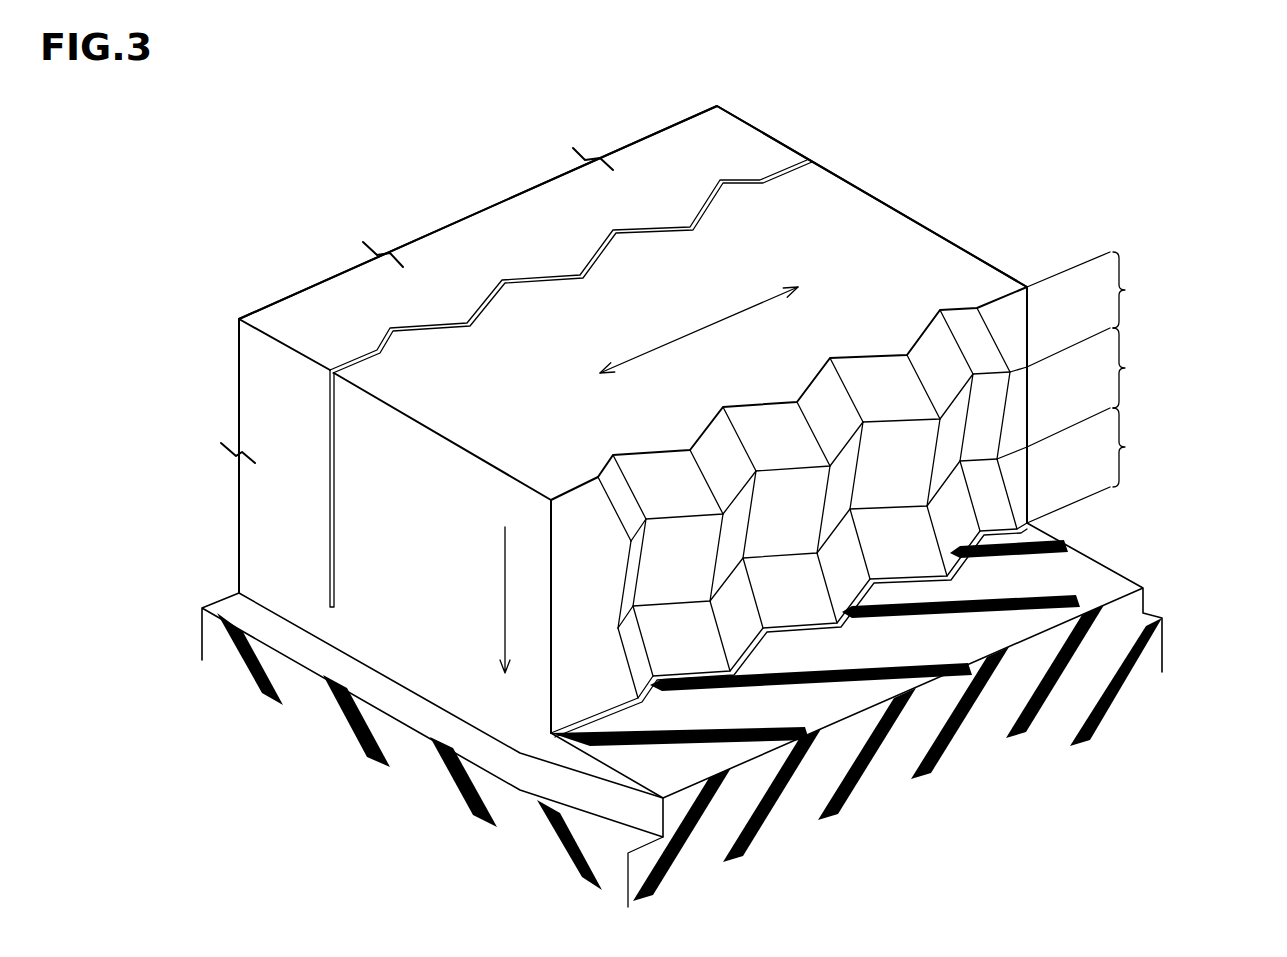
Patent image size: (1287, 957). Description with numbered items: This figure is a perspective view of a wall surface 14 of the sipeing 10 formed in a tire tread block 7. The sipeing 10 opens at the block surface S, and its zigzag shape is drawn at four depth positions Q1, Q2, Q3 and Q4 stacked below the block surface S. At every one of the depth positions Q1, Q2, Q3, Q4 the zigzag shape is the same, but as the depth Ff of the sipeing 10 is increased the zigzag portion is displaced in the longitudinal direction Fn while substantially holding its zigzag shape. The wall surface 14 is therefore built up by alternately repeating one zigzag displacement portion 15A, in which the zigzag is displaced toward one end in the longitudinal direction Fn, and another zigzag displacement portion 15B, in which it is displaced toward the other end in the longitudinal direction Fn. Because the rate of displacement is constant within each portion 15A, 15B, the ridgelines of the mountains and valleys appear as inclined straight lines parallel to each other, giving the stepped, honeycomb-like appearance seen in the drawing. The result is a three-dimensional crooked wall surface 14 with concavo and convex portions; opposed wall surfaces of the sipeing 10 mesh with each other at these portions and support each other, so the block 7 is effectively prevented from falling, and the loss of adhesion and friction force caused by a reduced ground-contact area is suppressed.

The block 7 is at (955, 197).
The block surface S is at (940, 273).
The sipeing 10 is at (737, 180).
The longitudinal direction Fn is at (698, 330).
The depth of the sipeing Ff is at (503, 603).
The depth position Q1 is at (1067, 268).
The depth position Q2 is at (1067, 346).
The depth position Q3 is at (1067, 427).
The depth position Q4 is at (1067, 504).
The one zigzag displacement portion 15A is at (916, 475).
The another zigzag displacement portion 15B is at (899, 478).
The wall surface 14 is at (907, 537).